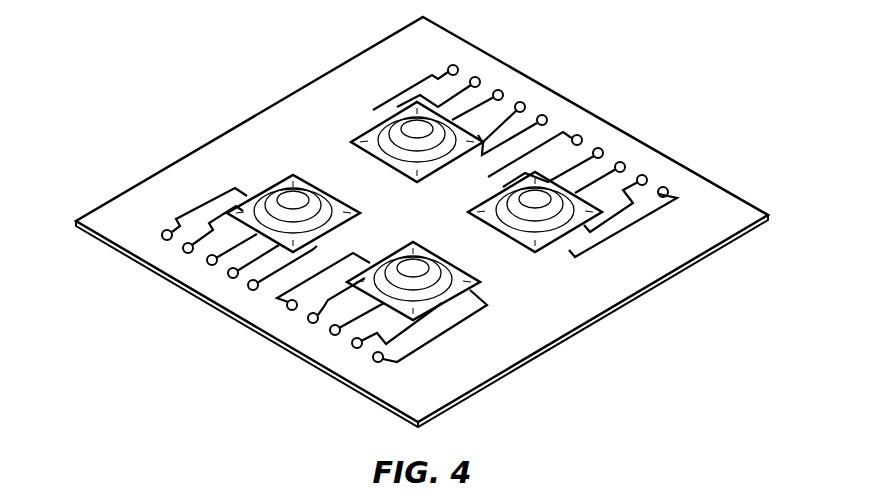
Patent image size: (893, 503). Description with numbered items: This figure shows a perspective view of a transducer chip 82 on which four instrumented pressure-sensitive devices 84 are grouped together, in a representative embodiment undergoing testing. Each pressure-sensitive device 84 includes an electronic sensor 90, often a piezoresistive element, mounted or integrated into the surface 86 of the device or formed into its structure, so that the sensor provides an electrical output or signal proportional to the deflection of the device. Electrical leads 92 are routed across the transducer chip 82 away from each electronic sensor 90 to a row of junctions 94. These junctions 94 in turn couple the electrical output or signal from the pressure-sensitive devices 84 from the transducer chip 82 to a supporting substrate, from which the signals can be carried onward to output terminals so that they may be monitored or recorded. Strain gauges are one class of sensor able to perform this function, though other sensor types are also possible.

The transducer chip 82 is at (680, 178).
The pressure-sensitive device 84 is at (350, 143).
The surface 86 is at (398, 128).
The electronic sensor 90 is at (440, 288).
The electrical leads 92 is at (197, 210).
The junctions 94 is at (232, 274).